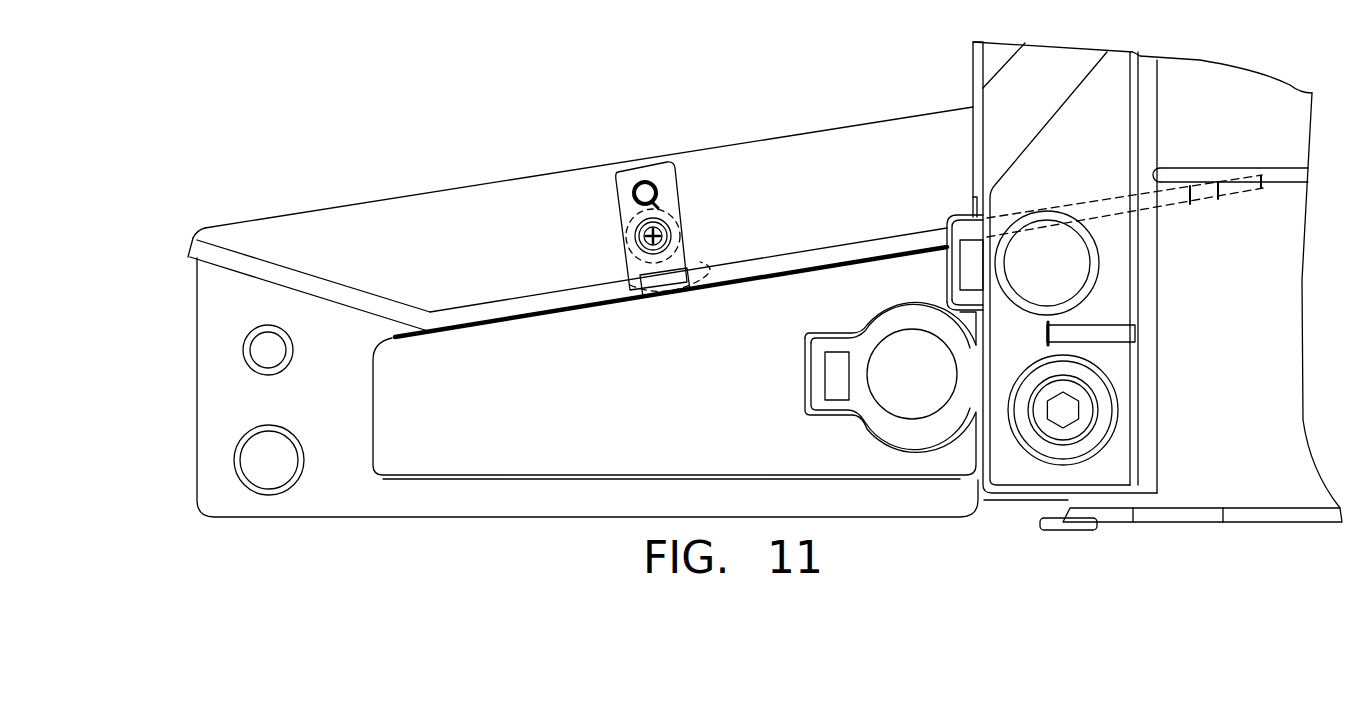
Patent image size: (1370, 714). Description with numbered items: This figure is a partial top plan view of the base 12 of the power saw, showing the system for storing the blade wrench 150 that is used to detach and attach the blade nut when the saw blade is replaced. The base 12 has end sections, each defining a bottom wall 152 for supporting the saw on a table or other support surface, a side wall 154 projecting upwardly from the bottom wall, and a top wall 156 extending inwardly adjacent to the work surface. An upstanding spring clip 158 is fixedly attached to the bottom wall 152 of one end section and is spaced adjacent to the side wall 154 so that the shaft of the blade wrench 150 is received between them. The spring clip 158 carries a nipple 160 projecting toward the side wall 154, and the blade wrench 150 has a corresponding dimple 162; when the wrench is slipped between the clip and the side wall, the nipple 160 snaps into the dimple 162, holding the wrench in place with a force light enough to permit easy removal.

The base 12 is at (1085, 286).
The blade wrench 150 is at (198, 238).
The bottom wall 152 is at (345, 206).
The side wall 154 is at (401, 329).
The top wall 156 is at (1193, 313).
The spring clip 158 is at (659, 250).
The nipple 160 is at (640, 282).
The dimple 162 is at (708, 276).